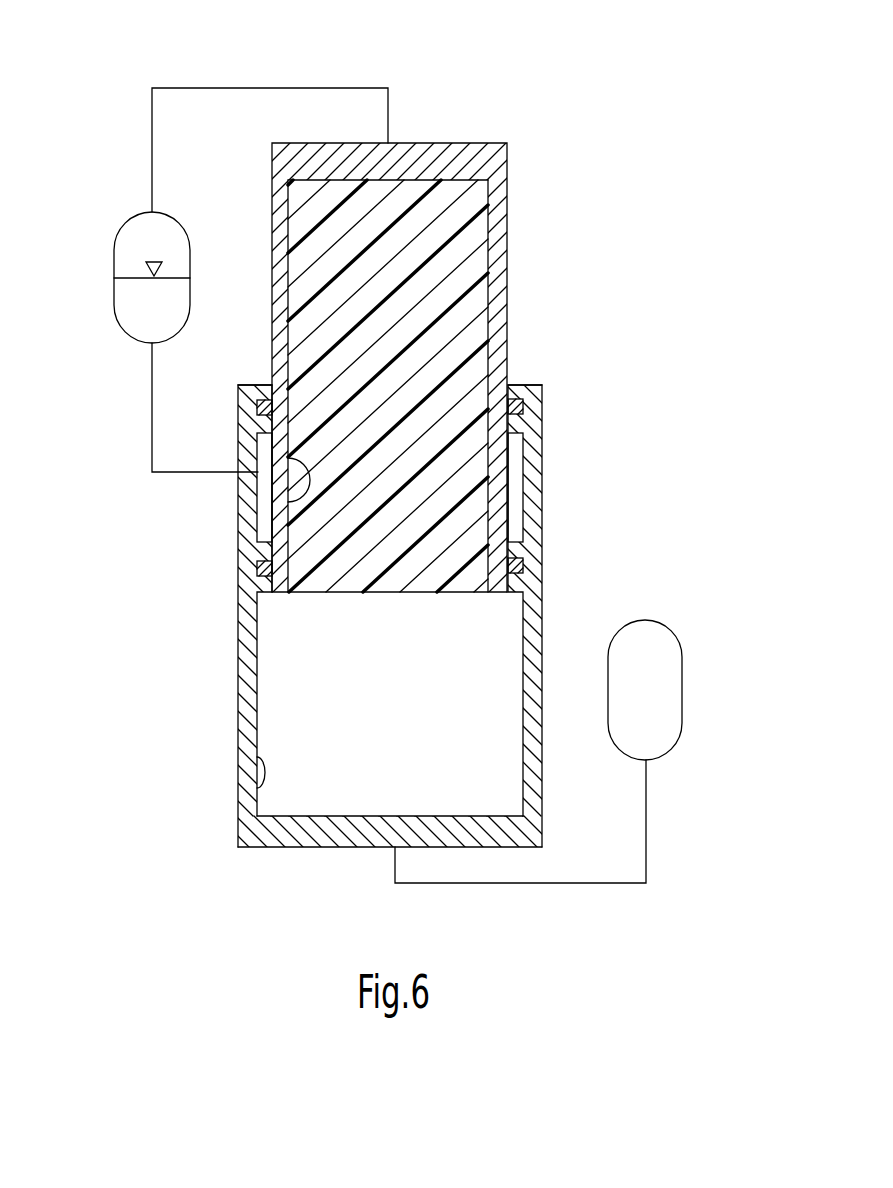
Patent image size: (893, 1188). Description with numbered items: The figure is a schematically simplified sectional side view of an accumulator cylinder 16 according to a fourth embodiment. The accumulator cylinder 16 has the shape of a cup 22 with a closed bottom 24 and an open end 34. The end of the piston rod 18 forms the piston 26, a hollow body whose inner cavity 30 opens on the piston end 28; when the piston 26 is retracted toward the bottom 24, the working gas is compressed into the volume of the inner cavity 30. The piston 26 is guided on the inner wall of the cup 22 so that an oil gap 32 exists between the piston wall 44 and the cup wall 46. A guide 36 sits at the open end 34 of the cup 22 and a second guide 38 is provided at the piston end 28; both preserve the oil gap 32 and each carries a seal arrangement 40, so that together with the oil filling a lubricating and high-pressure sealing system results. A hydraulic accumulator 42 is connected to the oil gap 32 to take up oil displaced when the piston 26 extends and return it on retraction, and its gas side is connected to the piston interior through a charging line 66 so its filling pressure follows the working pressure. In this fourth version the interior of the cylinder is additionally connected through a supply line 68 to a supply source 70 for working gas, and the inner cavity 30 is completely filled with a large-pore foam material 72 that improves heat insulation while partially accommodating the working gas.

The accumulator cylinder 16 is at (556, 238).
The piston rod 18 is at (300, 145).
The cup 22 is at (533, 600).
The bottom 24 is at (320, 826).
The piston 26 is at (500, 460).
The piston end 28 is at (285, 594).
The inner cavity 30 is at (487, 242).
The oil gap 32 is at (266, 538).
The open end 34 is at (257, 385).
The guide 36 is at (520, 383).
The second guide 38 is at (510, 548).
The seal arrangement 40 is at (523, 403).
The hydraulic accumulator 42 is at (122, 330).
The piston wall 44 is at (267, 510).
The cup wall 46 is at (240, 748).
The charging line 66 is at (245, 88).
The supply line 68 is at (563, 885).
The supply source 70 is at (680, 652).
The foam material 72 is at (383, 578).